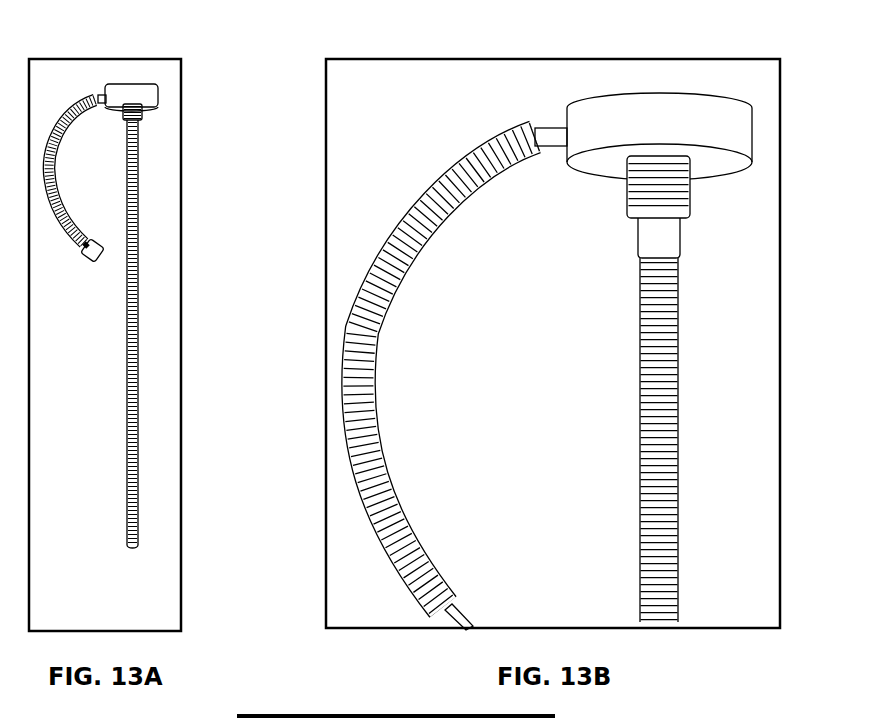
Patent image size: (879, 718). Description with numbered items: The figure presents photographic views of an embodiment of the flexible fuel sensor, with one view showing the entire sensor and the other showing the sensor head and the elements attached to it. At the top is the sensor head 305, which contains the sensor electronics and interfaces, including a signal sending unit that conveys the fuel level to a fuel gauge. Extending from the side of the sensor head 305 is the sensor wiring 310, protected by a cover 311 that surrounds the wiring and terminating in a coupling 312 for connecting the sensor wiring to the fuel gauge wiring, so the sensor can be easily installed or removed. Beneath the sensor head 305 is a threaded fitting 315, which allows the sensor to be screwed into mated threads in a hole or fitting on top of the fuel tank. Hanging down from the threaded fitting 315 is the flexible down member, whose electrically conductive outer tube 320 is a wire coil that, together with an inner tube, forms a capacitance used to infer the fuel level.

In FIG. 13A, the sensor head 305 is at (181, 92).
In FIG. 13B, the sensor head 305 is at (690, 92).
In FIG. 13B, the sensor wiring 310 is at (555, 137).
In FIG. 13A, the cover 311 is at (53, 172).
In FIG. 13B, the cover 311 is at (382, 293).
In FIG. 13A, the coupling 312 is at (100, 250).
In FIG. 13A, the threaded fitting 315 is at (140, 110).
In FIG. 13B, the threaded fitting 315 is at (660, 192).
In FIG. 13A, the outer tube 320 is at (138, 408).